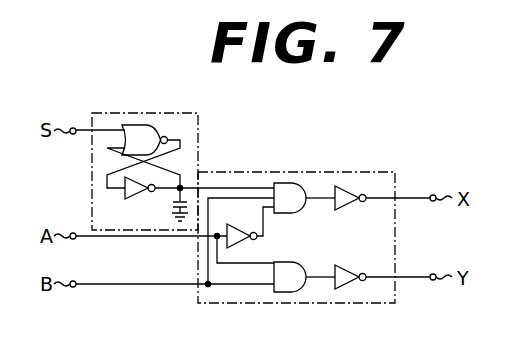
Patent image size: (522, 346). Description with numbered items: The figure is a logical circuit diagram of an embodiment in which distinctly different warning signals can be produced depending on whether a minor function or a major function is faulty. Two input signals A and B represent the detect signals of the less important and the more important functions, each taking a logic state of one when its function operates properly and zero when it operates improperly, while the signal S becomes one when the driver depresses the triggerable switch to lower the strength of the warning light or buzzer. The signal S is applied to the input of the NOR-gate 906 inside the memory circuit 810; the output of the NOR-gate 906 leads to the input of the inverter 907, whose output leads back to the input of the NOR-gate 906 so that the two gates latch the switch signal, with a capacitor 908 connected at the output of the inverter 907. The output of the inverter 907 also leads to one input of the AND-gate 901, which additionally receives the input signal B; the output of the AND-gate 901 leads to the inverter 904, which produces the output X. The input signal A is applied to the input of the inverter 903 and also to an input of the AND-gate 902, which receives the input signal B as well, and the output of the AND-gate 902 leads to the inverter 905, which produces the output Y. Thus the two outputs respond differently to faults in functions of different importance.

The memory circuit 810 is at (199, 113).
The NOR-gate 906 is at (138, 124).
The inverter 907 is at (138, 199).
The capacitor 908 is at (190, 201).
The AND-gate 901 is at (289, 183).
The AND-gate 902 is at (289, 262).
The inverter 903 is at (243, 248).
The inverter 904 is at (347, 186).
The inverter 905 is at (347, 265).